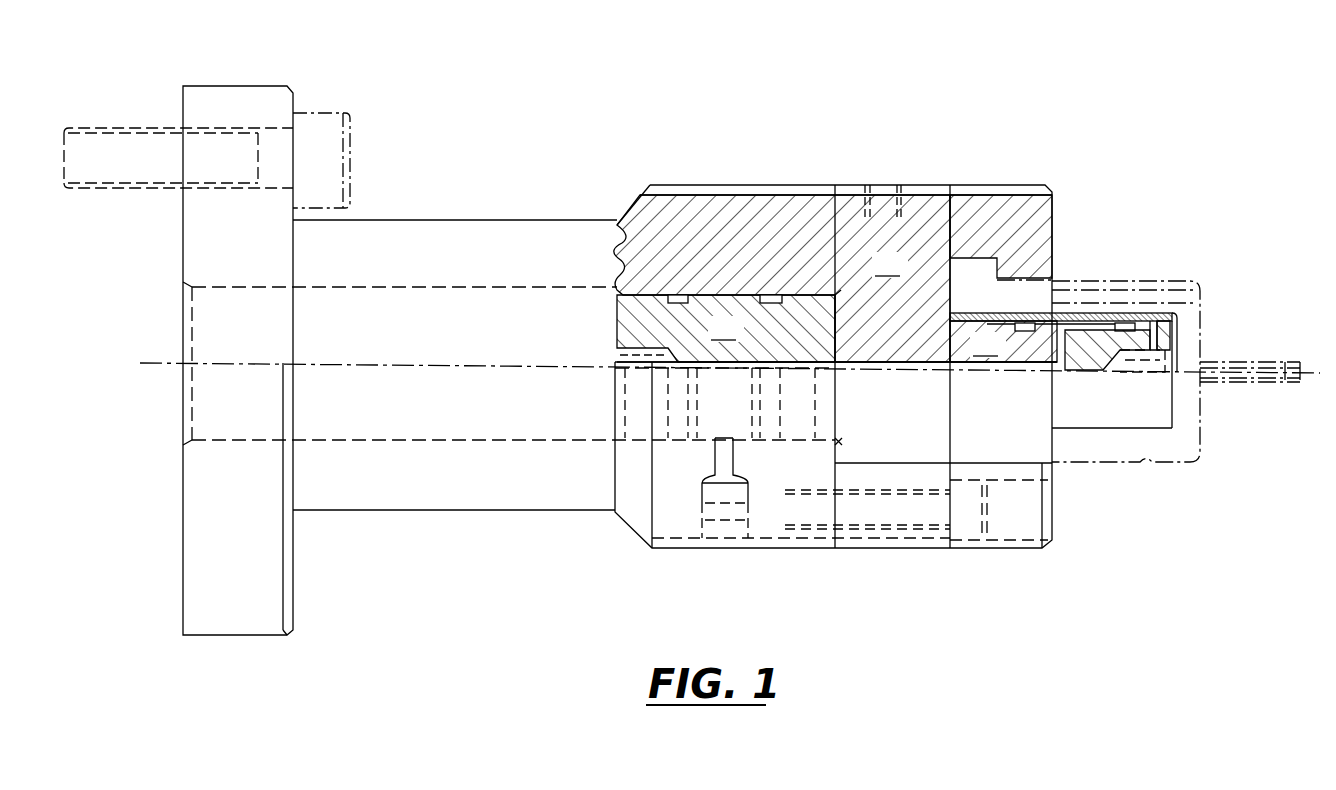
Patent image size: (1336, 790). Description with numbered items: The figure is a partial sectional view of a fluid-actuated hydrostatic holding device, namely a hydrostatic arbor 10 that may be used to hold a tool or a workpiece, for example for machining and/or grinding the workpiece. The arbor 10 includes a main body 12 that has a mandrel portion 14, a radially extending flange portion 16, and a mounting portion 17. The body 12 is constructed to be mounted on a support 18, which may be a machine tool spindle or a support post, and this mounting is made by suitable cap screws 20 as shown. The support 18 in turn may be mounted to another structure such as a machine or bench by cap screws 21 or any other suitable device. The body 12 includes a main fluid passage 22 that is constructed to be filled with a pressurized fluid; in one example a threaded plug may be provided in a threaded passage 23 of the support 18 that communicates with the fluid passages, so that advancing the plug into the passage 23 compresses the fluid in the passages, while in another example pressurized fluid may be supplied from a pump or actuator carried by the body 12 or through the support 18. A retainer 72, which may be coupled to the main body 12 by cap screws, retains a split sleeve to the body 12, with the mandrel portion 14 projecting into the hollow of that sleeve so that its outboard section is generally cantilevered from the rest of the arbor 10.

The hydrostatic arbor 10 is at (1240, 166).
The main body 12 is at (928, 178).
The mandrel portion 14 is at (1063, 370).
The radially extending flange portion 16 is at (782, 278).
The mounting portion 17 is at (726, 328).
The support 18 is at (465, 212).
The cap screws 20 is at (1000, 528).
The cap screws 21 is at (325, 104).
The main fluid passage 22 is at (893, 365).
The threaded passage 23 is at (718, 520).
The retainer 72 is at (1022, 178).